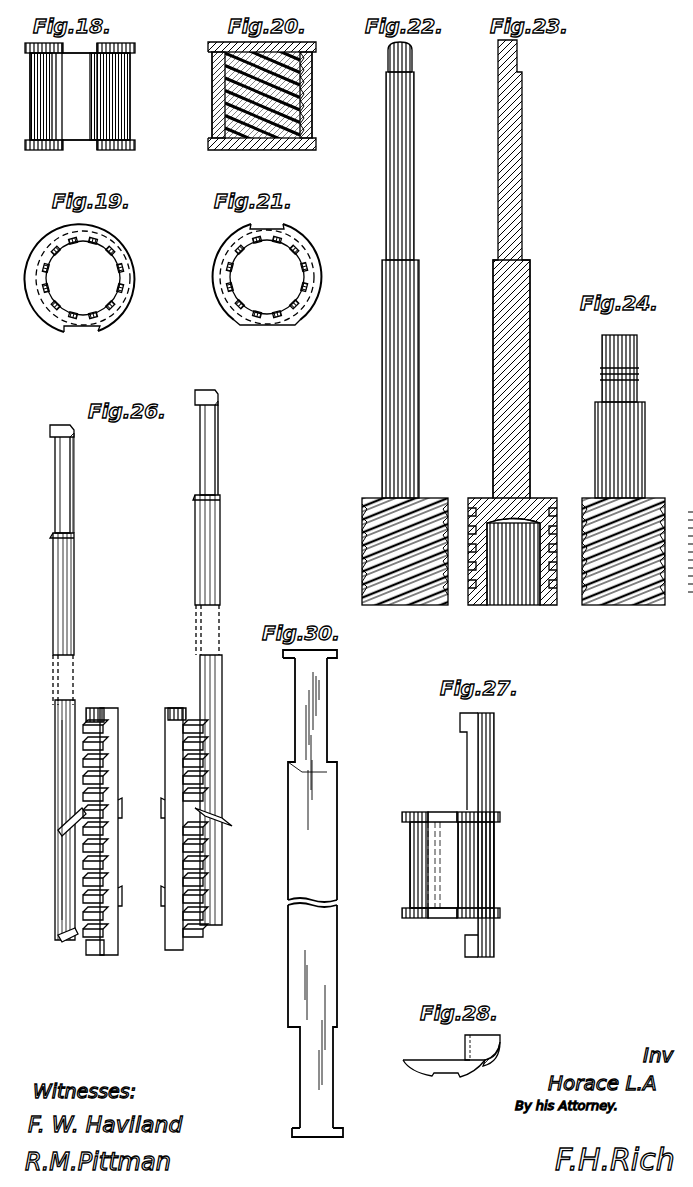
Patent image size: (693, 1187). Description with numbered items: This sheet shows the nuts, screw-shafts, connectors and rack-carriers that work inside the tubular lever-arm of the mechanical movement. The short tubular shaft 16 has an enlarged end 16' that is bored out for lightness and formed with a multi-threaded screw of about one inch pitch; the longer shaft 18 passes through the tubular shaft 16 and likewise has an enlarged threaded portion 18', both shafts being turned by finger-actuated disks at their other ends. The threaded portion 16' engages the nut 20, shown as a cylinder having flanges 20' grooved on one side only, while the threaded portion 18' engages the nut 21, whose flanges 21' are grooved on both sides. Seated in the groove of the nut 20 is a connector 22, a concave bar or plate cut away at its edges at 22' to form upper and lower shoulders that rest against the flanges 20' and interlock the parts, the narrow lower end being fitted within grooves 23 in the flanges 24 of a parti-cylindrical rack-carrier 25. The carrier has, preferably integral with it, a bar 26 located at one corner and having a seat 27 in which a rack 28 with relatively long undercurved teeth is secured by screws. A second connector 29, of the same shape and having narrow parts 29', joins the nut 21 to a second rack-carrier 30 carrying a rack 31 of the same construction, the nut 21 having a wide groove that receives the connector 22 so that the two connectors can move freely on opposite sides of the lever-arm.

In FIG. 24, the short tubular shaft 16 is at (636, 416).
In FIG. 24, the enlarged threaded end of tubular shaft 16' is at (632, 535).
In FIG. 22, the longer shaft 18 is at (417, 270).
In FIG. 23, the longer shaft 18 is at (529, 269).
In FIG. 22, the threaded portion of longer shaft 18' is at (381, 551).
In FIG. 23, the threaded portion of longer shaft 18' is at (498, 432).
In FIG. 18, the nut 20 is at (99, 96).
In FIG. 19, the nut 20 is at (102, 278).
In FIG. 19, the flanges of nut 20' is at (98, 278).
In FIG. 20, the nut 21 is at (282, 94).
In FIG. 21, the nut 21 is at (280, 277).
In FIG. 20, the flanges of nut 21' is at (288, 92).
In FIG. 21, the flanges of nut 21' is at (291, 272).
In FIG. 26, the connector 22 is at (84, 571).
In FIG. 30, the connector 22 is at (312, 893).
In FIG. 26, the cut-away edges of connector 22' is at (68, 483).
In FIG. 30, the cut-away edges of connector 22' is at (310, 720).
In FIG. 27, the grooves in carrier flanges 23 is at (448, 818).
In FIG. 28, the grooves in carrier flanges 23 is at (455, 1078).
In FIG. 26, the flanges of rack-carrier 24 is at (60, 832).
In FIG. 27, the flanges of rack-carrier 24 is at (500, 816).
In FIG. 28, the flanges of rack-carrier 24 is at (487, 1065).
In FIG. 26, the rack-carrier 25 is at (58, 870).
In FIG. 27, the rack-carrier 25 is at (452, 865).
In FIG. 28, the rack-carrier 25 is at (440, 1060).
In FIG. 26, the bar 26 is at (118, 850).
In FIG. 27, the bar 26 is at (495, 792).
In FIG. 28, the bar 26 is at (500, 1042).
In FIG. 27, the seat 27 is at (467, 762).
In FIG. 26, the rack 28 is at (88, 940).
In FIG. 26, the connector 29 is at (227, 530).
In FIG. 26, the narrow parts of connector 29' is at (185, 448).
In FIG. 26, the rack-carrier 30 is at (218, 872).
In FIG. 26, the rack 31 is at (195, 935).